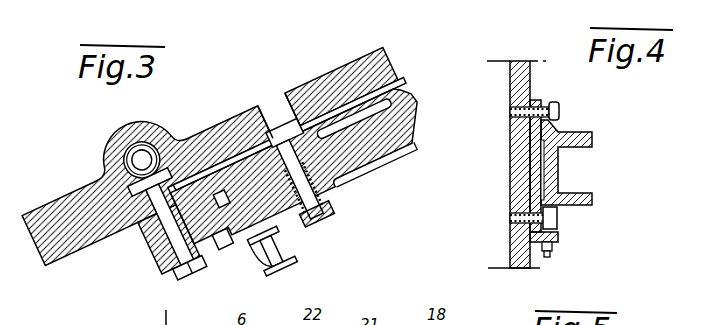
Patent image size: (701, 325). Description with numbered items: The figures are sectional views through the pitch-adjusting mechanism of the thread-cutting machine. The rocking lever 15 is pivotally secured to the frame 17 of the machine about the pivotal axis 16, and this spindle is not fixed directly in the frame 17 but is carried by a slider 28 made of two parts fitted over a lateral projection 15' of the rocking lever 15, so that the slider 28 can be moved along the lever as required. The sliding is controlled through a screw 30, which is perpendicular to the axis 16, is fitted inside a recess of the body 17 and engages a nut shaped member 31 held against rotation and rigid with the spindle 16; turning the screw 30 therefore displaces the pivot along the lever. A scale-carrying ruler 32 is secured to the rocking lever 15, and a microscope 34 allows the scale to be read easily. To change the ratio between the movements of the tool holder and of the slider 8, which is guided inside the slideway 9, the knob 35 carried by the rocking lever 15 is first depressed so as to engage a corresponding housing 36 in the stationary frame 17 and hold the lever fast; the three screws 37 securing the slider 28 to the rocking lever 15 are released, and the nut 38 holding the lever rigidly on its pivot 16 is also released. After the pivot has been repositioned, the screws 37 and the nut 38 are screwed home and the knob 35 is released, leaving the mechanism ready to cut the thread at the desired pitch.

In FIG. 4, the slider 8 is at (580, 133).
In FIG. 4, the slideway 9 is at (545, 103).
In FIG. 3, the rocking lever 15 is at (303, 167).
In FIG. 3, the lateral projection 15' is at (289, 134).
In FIG. 3, the pivotal axis 16 is at (182, 238).
In FIG. 3, the frame 17 is at (333, 72).
In FIG. 4, the frame 17 is at (510, 150).
In FIG. 3, the slider 28 is at (148, 240).
In FIG. 3, the screw 30 is at (139, 158).
In FIG. 3, the nut shaped member 31 is at (135, 170).
In FIG. 3, the scale-carrying ruler 32 is at (273, 223).
In FIG. 3, the microscope 34 is at (290, 259).
In FIG. 3, the knob 35 is at (337, 214).
In FIG. 3, the housing 36 is at (275, 122).
In FIG. 3, the screws 37 is at (230, 247).
In FIG. 3, the nut 38 is at (200, 282).